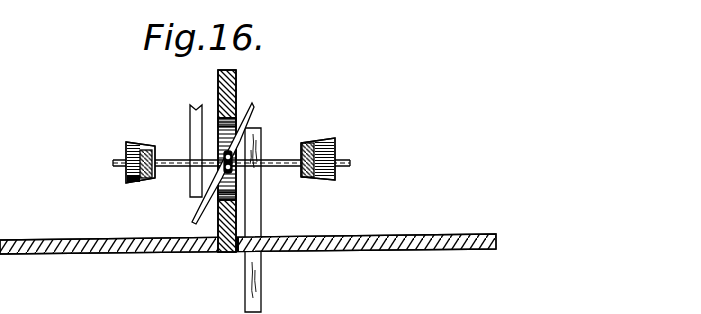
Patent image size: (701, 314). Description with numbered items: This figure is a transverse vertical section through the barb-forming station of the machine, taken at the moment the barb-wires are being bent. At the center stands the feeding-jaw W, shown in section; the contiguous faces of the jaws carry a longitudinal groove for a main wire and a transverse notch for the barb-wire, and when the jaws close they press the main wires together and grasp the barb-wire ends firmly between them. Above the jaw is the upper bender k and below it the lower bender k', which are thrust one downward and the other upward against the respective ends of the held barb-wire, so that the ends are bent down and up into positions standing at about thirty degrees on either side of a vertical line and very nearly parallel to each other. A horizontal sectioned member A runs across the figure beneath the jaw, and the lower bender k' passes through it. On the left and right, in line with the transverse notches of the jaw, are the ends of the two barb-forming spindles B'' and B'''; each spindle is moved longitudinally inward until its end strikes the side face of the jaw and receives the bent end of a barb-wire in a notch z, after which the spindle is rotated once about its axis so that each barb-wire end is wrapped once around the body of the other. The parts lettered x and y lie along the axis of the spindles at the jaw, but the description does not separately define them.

The base plate A is at (248, 235).
The feeding-jaw W is at (217, 80).
The bender k is at (187, 151).
The bender k' is at (262, 220).
The shaft section with lever x is at (172, 167).
The shaft section y is at (196, 211).
The notch z is at (301, 151).
The barb-forming spindle B'' is at (140, 152).
The barb-forming spindle B''' is at (318, 150).